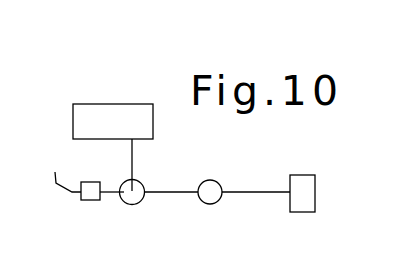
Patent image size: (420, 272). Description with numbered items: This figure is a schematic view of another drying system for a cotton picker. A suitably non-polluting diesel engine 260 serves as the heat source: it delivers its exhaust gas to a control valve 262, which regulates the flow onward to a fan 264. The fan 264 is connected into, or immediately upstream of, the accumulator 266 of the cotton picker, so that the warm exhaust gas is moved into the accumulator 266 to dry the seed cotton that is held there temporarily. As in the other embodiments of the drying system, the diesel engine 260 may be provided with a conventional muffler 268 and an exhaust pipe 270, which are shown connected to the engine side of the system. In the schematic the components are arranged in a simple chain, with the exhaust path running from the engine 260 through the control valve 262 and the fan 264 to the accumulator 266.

The diesel engine 260 is at (114, 104).
The control valve 262 is at (138, 204).
The fan 264 is at (207, 180).
The accumulator 266 is at (290, 184).
The muffler 268 is at (96, 200).
The exhaust pipe 270 is at (54, 169).